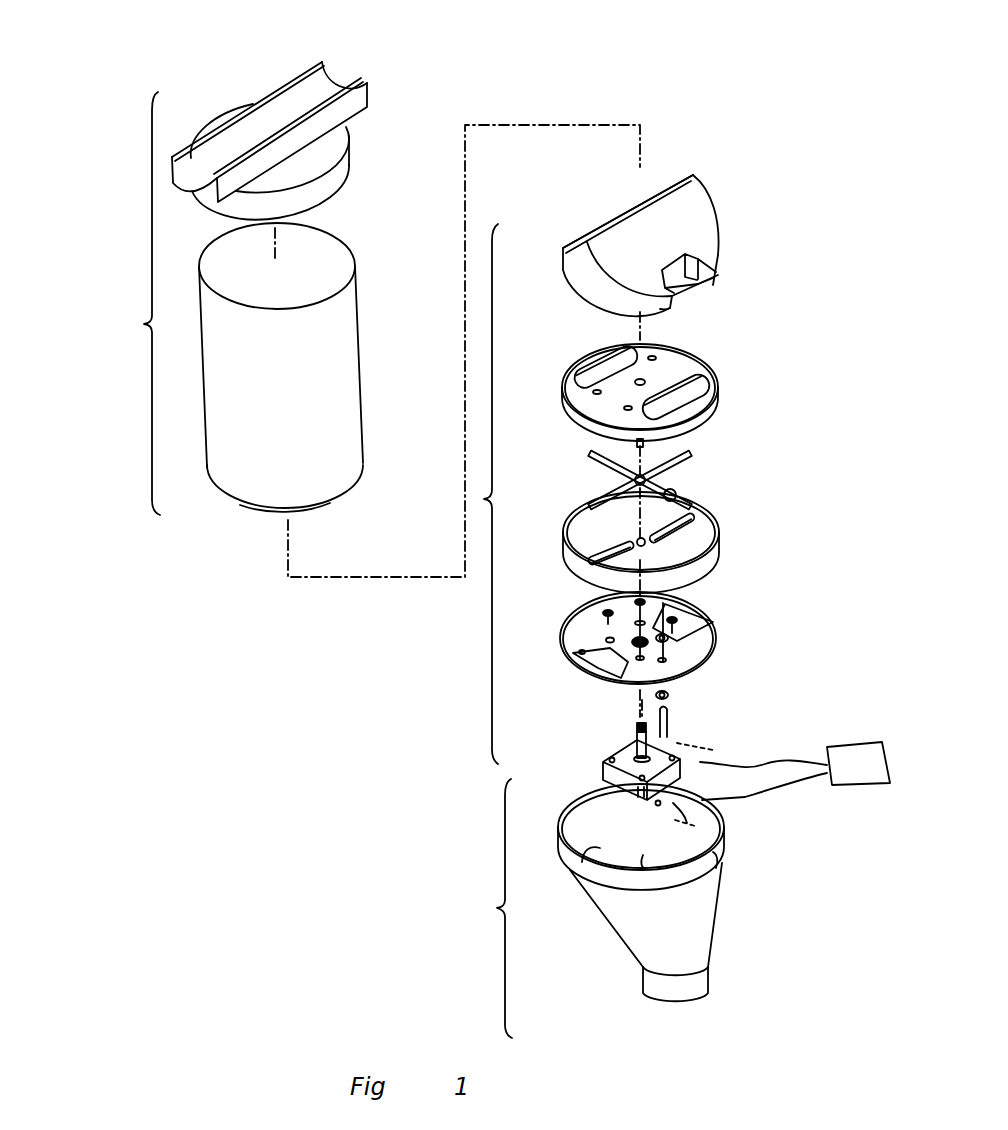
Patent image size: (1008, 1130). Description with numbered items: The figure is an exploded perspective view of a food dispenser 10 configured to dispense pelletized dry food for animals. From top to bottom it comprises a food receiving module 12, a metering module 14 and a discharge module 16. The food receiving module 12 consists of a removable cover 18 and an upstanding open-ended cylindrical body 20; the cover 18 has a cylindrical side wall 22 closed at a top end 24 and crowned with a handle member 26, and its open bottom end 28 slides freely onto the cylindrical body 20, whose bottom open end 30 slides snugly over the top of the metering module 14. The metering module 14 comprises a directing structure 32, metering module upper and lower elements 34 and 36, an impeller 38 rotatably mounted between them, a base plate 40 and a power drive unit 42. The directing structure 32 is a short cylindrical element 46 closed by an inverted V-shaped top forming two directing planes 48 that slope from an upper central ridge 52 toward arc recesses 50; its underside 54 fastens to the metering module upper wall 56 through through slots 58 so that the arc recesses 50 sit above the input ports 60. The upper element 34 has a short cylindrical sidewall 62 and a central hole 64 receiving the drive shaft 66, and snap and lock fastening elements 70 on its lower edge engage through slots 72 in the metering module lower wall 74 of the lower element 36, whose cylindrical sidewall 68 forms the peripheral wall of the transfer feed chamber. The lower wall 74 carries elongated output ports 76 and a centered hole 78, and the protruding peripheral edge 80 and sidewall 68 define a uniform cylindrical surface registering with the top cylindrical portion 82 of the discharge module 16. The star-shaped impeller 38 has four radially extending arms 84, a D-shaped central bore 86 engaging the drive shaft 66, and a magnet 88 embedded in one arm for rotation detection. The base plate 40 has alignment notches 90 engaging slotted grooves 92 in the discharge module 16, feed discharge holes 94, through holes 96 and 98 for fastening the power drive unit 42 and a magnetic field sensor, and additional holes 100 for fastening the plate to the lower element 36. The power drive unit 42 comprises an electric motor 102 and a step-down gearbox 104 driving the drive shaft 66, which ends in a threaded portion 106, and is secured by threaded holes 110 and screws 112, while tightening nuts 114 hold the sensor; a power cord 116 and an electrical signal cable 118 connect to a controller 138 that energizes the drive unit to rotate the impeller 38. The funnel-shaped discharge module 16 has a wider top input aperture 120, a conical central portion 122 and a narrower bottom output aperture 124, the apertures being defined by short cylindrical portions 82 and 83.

The food dispenser 10 is at (92, 62).
The food receiving module 12 is at (134, 323).
The metering module 14 is at (665, 473).
The discharge module 16 is at (486, 907).
The removable cover 18 is at (290, 138).
The open-ended cylindrical body 20 is at (296, 398).
The cylindrical side wall 22 is at (338, 181).
The top end 24 is at (334, 154).
The handle member 26 is at (289, 102).
The open bottom end 28 is at (323, 207).
The bottom open end 30 is at (312, 506).
The directing structure 32 is at (634, 232).
The metering module upper element 34 is at (638, 390).
The metering module lower element 36 is at (634, 549).
The impeller 38 is at (640, 487).
The base plate 40 is at (637, 661).
The power drive unit 42 is at (666, 759).
The cylindrical element 46 is at (597, 292).
The directing planes 48 is at (700, 208).
The arc recesses 50 is at (694, 270).
The upper central ridge 52 is at (666, 184).
The underside 54 is at (674, 310).
The metering module upper wall 56 is at (708, 380).
The through slots 58 is at (700, 357).
The input ports 60 is at (597, 358).
The cylindrical sidewall 62 is at (688, 428).
The central hole 64 is at (648, 380).
The drive shaft 66 is at (636, 730).
The cylindrical sidewall 68 is at (703, 573).
The snap and lock fastening elements 70 is at (632, 445).
The through slots 72 is at (643, 507).
The metering module lower wall 74 is at (592, 562).
The output ports 76 is at (700, 523).
The centered hole 78 is at (646, 545).
The protruding peripheral edge 80 is at (712, 410).
The top cylindrical portion 82 is at (713, 853).
The cylindrical portion 83 is at (710, 965).
The radially extending arms 84 is at (693, 462).
The D-shaped central bore 86 is at (590, 490).
The magnet 88 is at (678, 495).
The alignment notches 90 is at (560, 662).
The slotted grooves 92 is at (558, 822).
The feed discharge holes 94 is at (588, 668).
The through holes 96 is at (670, 640).
The through hole 98 is at (667, 662).
The holes 100 is at (588, 652).
The electric motor 102 is at (617, 800).
The step-down gearbox 104 is at (668, 781).
The threaded portion 106 is at (634, 733).
The threaded holes 110 is at (612, 760).
The screws 112 is at (604, 614).
The tightening nuts 114 is at (668, 731).
The power cord 116 is at (664, 804).
The electrical signal cable 118 is at (686, 745).
The top input aperture 120 is at (600, 848).
The conical central portion 122 is at (690, 910).
The bottom output aperture 124 is at (693, 1007).
The controller 138 is at (795, 771).